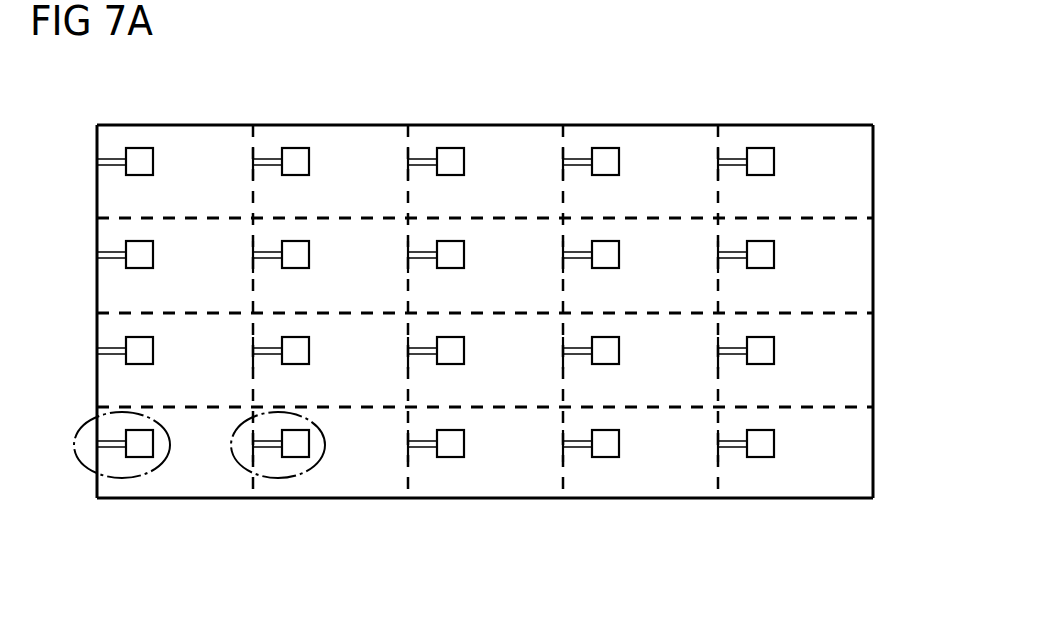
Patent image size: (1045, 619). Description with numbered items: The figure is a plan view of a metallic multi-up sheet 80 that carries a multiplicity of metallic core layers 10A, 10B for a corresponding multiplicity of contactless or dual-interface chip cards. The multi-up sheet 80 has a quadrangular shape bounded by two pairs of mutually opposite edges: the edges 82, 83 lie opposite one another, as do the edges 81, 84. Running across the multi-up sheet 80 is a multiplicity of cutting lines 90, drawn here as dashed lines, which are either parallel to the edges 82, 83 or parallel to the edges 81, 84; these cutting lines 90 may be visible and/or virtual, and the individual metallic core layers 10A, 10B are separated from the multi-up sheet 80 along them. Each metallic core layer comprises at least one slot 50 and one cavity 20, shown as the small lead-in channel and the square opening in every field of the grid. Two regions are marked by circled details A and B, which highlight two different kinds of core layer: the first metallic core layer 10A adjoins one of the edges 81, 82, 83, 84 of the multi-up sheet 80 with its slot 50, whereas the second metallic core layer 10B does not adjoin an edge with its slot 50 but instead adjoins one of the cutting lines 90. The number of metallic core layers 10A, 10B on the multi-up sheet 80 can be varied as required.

The metallic multi-up sheet 80 is at (488, 308).
The edge 81 is at (97, 142).
The edge 82 is at (810, 122).
The edge 83 is at (807, 502).
The edge 84 is at (875, 158).
The cutting lines 90 is at (227, 125).
The cavity 20 is at (137, 148).
The slot 50 is at (97, 163).
The first metallic core layer 10A is at (153, 492).
The second metallic core layer 10B is at (357, 490).
The detail A is at (83, 462).
The detail B is at (268, 478).